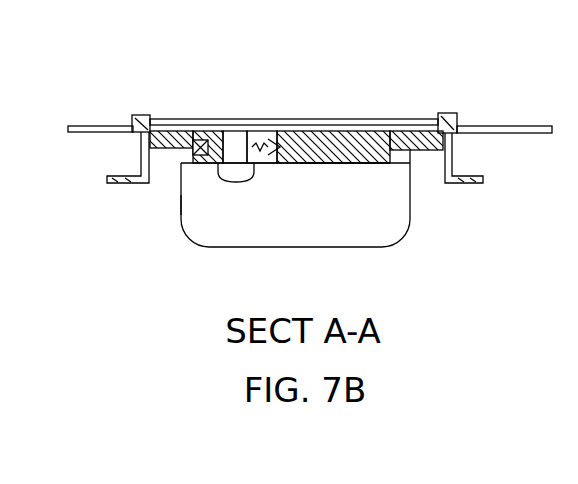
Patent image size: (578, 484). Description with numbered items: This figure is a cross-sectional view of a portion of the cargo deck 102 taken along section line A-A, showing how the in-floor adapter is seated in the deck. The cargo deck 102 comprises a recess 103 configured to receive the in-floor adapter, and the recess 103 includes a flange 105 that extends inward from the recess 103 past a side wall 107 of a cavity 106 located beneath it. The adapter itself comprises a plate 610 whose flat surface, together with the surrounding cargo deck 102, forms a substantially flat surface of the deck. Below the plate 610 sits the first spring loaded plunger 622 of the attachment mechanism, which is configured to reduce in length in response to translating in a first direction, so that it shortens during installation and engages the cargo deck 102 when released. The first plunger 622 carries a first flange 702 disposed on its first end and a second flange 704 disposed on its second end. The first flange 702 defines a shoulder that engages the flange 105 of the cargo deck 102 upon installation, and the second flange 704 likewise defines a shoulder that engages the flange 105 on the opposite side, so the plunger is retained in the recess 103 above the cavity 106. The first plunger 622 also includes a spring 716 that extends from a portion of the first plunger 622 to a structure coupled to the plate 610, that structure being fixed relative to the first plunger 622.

The cargo deck 102 is at (67, 127).
The recess 103 is at (150, 118).
The flange 105 is at (187, 127).
The cavity 106 is at (272, 227).
The side wall 107 is at (181, 205).
The plate 610 is at (370, 119).
The first spring loaded plunger 622 is at (340, 163).
The first flange 702 is at (447, 183).
The second flange 704 is at (188, 148).
The spring 716 is at (265, 136).